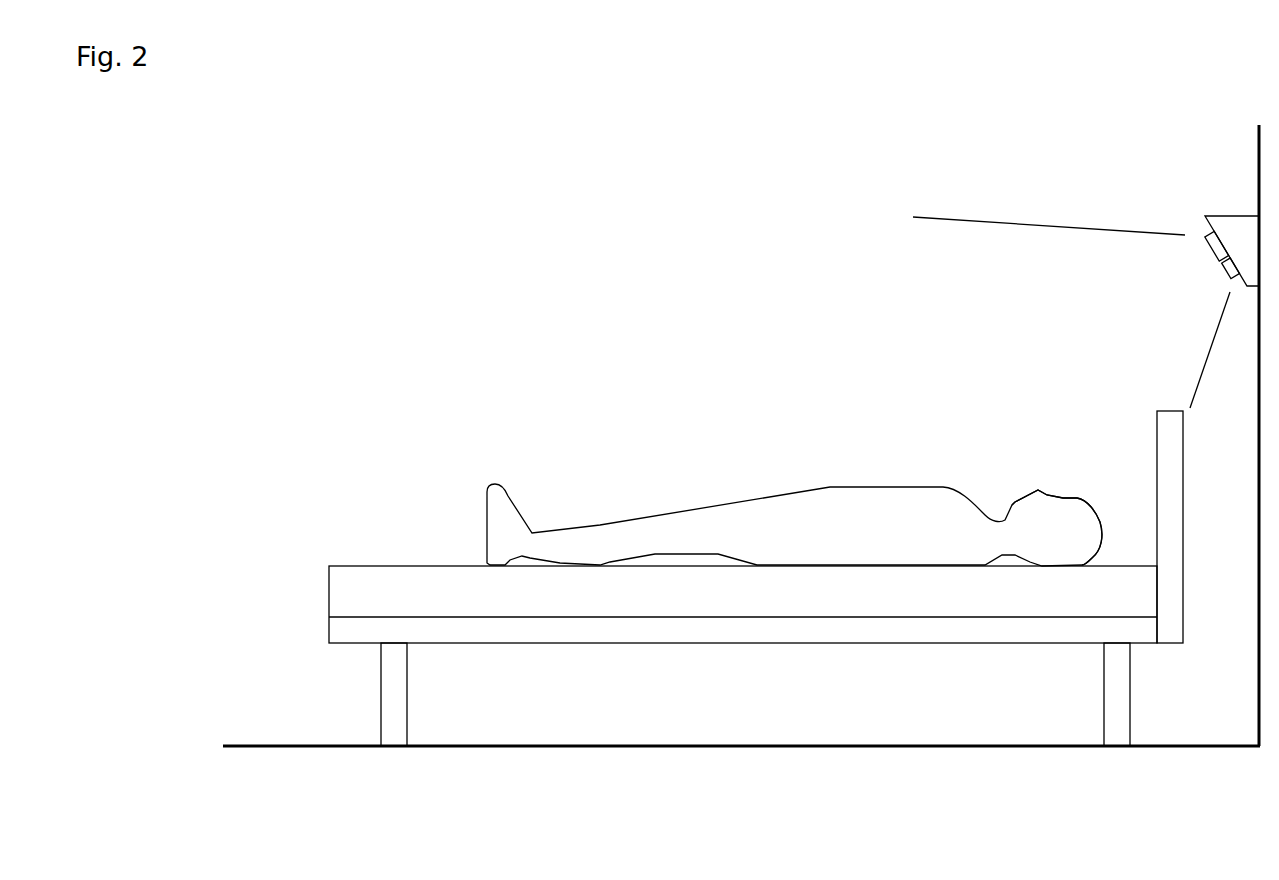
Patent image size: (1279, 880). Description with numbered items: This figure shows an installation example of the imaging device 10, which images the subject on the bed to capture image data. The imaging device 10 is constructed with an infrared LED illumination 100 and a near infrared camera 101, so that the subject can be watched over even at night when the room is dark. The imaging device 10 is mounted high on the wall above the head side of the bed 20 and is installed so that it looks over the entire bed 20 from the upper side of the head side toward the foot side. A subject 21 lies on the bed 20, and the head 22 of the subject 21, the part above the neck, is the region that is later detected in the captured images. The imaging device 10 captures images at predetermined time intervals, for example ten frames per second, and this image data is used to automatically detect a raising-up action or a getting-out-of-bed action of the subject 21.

The imaging device 10 is at (1086, 277).
The infrared LED illumination 100 is at (1206, 236).
The near infrared camera 101 is at (1222, 268).
The bed 20 is at (380, 578).
The subject 21 is at (883, 498).
The head 22 is at (1067, 498).